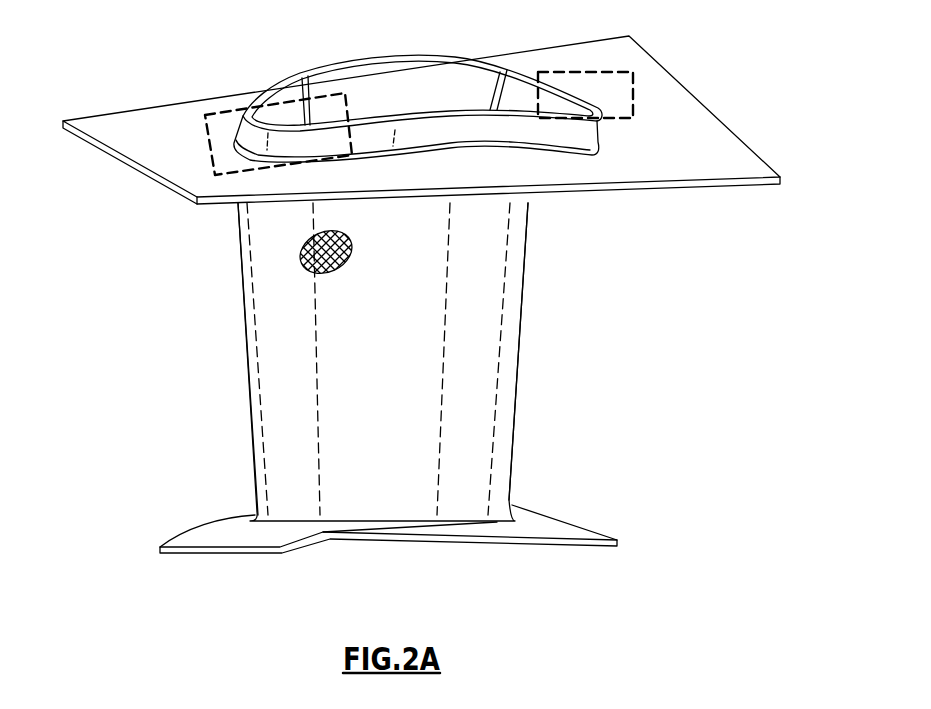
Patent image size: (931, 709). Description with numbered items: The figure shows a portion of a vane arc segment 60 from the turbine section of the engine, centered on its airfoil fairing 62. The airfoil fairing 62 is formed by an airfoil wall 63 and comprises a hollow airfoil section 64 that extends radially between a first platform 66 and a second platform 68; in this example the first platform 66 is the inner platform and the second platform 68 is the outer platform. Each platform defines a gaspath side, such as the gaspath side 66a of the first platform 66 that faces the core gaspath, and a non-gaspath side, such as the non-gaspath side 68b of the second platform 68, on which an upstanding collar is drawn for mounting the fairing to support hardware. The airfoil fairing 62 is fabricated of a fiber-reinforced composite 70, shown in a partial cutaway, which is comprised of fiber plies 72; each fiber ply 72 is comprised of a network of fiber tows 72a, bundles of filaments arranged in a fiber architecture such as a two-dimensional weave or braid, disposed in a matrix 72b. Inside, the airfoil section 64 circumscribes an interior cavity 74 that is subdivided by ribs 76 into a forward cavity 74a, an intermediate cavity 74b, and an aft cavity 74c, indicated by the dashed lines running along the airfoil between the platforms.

The vane arc segment 60 is at (126, 440).
The airfoil fairing 62 is at (520, 449).
The airfoil wall 63 is at (290, 362).
The airfoil section 64 is at (582, 191).
The first platform 66 is at (602, 548).
The gaspath side 66a is at (233, 532).
The second platform 68 is at (725, 186).
The non-gaspath side 68b is at (712, 144).
The fiber-reinforced composite 70 is at (303, 240).
The fiber plies 72 is at (292, 282).
The fiber tows 72a is at (338, 268).
The matrix 72b is at (300, 258).
The interior cavity 74 is at (484, 379).
The forward cavity 74a is at (288, 442).
The intermediate cavity 74b is at (413, 448).
The aft cavity 74c is at (470, 313).
The ribs 76 is at (478, 90).